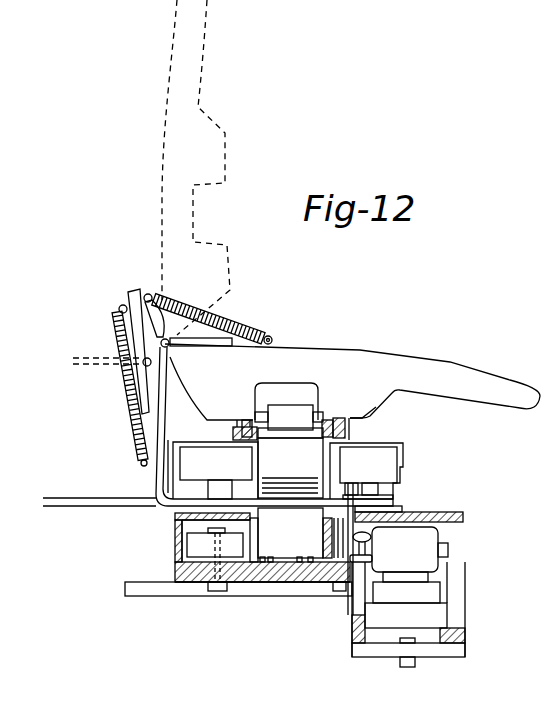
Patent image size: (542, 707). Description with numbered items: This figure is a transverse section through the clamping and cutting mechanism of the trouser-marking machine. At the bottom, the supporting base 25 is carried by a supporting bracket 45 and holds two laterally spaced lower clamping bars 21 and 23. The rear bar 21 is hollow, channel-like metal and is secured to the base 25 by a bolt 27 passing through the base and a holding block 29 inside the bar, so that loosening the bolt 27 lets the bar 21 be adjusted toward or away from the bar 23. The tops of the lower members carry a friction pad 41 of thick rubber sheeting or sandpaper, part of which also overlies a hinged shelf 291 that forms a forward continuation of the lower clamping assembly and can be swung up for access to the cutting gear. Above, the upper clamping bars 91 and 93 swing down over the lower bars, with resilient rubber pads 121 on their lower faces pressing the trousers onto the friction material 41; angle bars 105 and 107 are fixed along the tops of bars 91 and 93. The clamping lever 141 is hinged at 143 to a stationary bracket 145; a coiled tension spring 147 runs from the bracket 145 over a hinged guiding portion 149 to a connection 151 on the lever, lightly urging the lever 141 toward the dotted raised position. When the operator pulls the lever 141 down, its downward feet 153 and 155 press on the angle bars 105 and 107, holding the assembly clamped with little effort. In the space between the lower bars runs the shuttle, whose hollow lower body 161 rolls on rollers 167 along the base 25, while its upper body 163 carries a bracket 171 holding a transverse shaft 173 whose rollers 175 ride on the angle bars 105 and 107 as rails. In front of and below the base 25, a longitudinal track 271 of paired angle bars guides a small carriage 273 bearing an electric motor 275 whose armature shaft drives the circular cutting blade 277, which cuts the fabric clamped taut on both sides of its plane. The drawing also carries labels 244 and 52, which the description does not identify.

The dashed outline of adjacent member 244 is at (130, 167).
The clamping lever 141 is at (413, 367).
The hinge 143 is at (168, 347).
The connection 151 is at (272, 338).
The hinged guiding portion 149 is at (127, 293).
The coiled tension spring 147 is at (128, 405).
The stationary bracket 145 is at (155, 474).
The support plate 52 is at (86, 506).
The downward foot 153 is at (215, 420).
The angle bar 105 is at (240, 434).
The upper clamping bar 91 is at (194, 442).
The resilient pad 121 is at (245, 480).
The upper shuttle body 163 is at (310, 462).
The transverse shaft 173 is at (273, 410).
The bracket 171 is at (290, 415).
The rollers 175 is at (260, 418).
The downward foot 155 is at (352, 418).
The angle bar 107 is at (358, 430).
The upper clamping bar 93 is at (400, 444).
The friction pad 41 is at (313, 513).
The shelf 291 is at (465, 519).
The lower clamping bar 21 is at (175, 524).
The holding block 29 is at (190, 545).
The supporting base 25 is at (265, 580).
The supporting bracket 45 is at (145, 596).
The bolt 27 is at (216, 592).
The lower clamping bar 23 is at (325, 538).
The lower shuttle body 161 is at (295, 545).
The roller 167 is at (310, 600).
The circular cutting blade 277 is at (368, 535).
The electric motor 275 is at (432, 562).
The carriage 273 is at (440, 610).
The track 271 is at (440, 645).